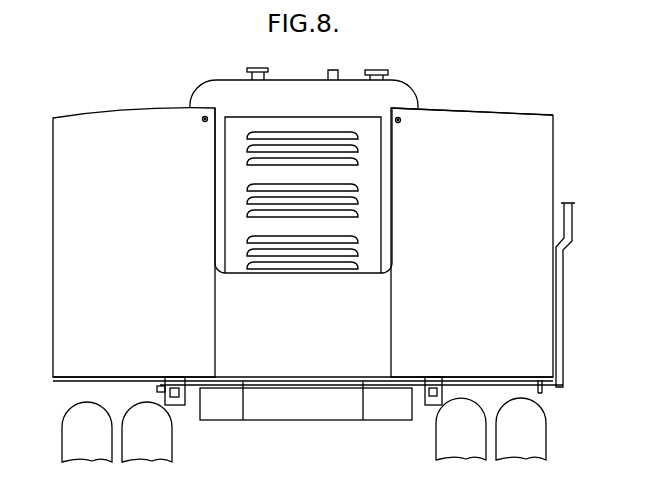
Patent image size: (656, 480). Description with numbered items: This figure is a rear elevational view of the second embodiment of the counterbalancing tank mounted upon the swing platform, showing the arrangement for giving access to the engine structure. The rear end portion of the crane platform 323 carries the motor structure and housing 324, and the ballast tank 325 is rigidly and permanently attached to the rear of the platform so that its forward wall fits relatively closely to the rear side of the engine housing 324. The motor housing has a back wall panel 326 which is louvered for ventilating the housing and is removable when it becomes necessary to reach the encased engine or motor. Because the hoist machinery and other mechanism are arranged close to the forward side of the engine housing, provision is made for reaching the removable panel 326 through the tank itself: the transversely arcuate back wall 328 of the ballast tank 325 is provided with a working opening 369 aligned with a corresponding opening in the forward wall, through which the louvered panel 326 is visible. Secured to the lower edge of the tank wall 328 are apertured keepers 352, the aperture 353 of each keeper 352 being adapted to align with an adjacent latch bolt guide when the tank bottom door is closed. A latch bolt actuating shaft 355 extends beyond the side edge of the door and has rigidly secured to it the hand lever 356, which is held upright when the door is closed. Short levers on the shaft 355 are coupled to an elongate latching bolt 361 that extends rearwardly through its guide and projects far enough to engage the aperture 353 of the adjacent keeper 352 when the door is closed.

The rear end portion of the crane platform 323 is at (227, 422).
The motor structure and housing 324 is at (211, 79).
The ballast tank 325 is at (532, 103).
The back wall panel 326 is at (345, 118).
The back wall 328 is at (72, 264).
The keeper 352 is at (441, 383).
The aperture 353 is at (428, 379).
The latch bolt actuating shaft 355 is at (528, 389).
The hand lever 356 is at (563, 315).
The latching bolt 361 is at (174, 388).
The working opening 369 is at (472, 242).